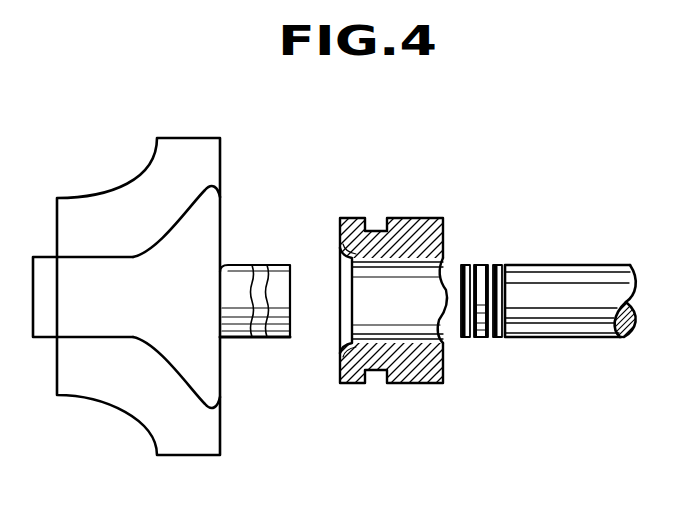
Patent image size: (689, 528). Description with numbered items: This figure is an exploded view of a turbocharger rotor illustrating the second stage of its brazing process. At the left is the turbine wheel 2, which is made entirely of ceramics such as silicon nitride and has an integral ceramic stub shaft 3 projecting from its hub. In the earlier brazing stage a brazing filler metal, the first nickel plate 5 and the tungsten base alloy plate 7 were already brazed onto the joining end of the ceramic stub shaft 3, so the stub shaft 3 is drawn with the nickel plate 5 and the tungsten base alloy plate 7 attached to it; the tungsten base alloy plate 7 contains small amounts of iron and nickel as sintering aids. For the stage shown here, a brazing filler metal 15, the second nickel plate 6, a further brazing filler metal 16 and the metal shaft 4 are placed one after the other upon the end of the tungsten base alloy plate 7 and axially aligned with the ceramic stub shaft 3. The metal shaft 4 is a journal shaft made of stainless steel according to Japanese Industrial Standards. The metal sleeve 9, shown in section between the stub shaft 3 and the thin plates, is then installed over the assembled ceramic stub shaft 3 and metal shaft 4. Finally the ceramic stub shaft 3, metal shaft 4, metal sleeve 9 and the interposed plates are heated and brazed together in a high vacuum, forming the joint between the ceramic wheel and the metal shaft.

The turbine wheel 2 is at (117, 193).
The stub shaft 3 is at (238, 263).
The metal shaft 4 is at (582, 272).
The nickel plate 5 is at (260, 337).
The nickel plate 6 is at (478, 337).
The tungsten base alloy plate 7 is at (278, 265).
The metal sleeve 9 is at (418, 218).
The brazing filler metal 15 is at (462, 267).
The brazing filler metal 16 is at (495, 267).